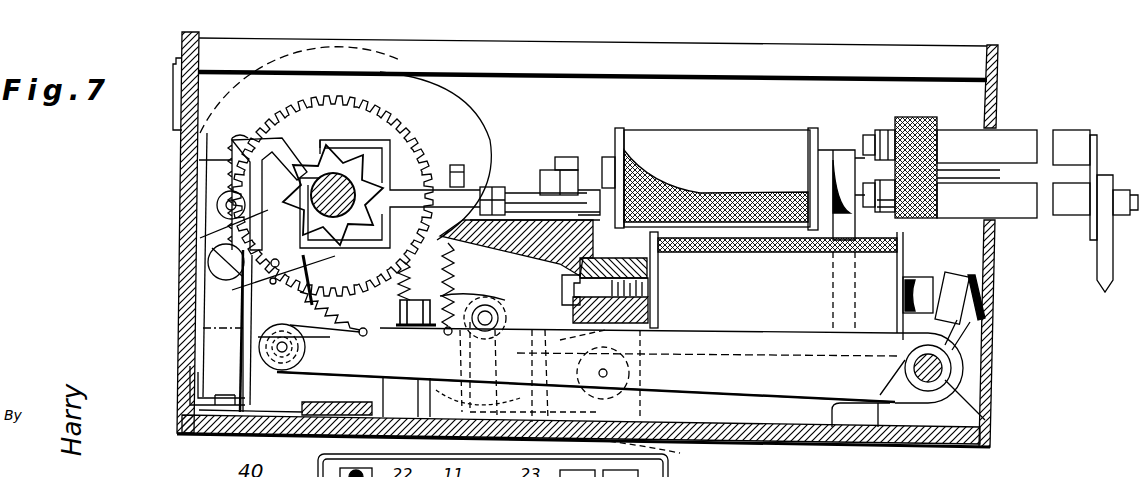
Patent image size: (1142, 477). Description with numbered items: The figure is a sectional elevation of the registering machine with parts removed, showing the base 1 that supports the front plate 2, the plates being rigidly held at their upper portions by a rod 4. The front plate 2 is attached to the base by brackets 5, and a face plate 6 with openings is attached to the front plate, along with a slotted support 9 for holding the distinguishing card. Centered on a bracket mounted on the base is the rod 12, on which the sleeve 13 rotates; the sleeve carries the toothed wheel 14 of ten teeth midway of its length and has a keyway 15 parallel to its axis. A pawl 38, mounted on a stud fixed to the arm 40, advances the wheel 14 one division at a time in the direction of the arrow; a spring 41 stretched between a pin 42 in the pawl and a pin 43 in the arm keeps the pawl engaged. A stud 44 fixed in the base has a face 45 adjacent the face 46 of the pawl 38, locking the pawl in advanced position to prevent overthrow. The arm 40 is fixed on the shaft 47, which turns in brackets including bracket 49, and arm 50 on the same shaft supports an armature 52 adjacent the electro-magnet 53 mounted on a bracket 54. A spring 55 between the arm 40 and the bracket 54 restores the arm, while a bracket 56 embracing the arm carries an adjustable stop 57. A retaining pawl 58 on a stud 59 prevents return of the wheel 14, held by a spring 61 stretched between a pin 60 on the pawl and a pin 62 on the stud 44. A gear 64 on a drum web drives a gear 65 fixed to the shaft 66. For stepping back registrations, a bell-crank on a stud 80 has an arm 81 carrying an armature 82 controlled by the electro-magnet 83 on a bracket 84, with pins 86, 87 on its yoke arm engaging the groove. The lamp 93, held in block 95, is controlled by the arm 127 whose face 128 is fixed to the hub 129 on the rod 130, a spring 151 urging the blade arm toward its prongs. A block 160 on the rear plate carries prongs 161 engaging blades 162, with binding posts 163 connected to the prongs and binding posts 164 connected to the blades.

The base 1 is at (867, 447).
The front plate 2 is at (180, 425).
The rod 4 is at (510, 48).
The brackets 5 is at (200, 432).
The face plate 6 is at (988, 246).
The slotted support 9 is at (176, 62).
The rod 12 is at (378, 179).
The sleeve 13 is at (305, 180).
The toothed wheel 14 is at (417, 153).
The keyway 15 is at (337, 165).
The pawl 38 is at (200, 238).
The arm 40 is at (671, 374).
The spring 41 is at (586, 363).
The pin 42 is at (212, 328).
The pin 43 is at (337, 396).
The stud 44 is at (258, 337).
The face 45 is at (233, 180).
The face 46 is at (233, 145).
The shaft 47 is at (942, 369).
The bracket 49 is at (962, 414).
The arm 50 is at (953, 338).
The armature 52 is at (957, 294).
The electro-magnet 53 is at (780, 286).
The bracket 54 is at (658, 265).
The spring 55 is at (585, 299).
The bracket 56 is at (451, 397).
The adjustable stop 57 is at (425, 306).
The pawl 58 is at (315, 292).
The stud 59 is at (272, 262).
The pin 60 is at (220, 272).
The spring 61 is at (232, 255).
The pin 62 is at (222, 208).
The gear 64 is at (417, 147).
The gear 65 is at (445, 232).
The shaft 66 is at (473, 331).
The stud 80 is at (547, 183).
The arm 81 is at (608, 142).
The armature 82 is at (577, 197).
The electro-magnet 83 is at (712, 140).
The bracket 84 is at (845, 158).
The pin 86 is at (327, 143).
The pin 87 is at (448, 292).
The lamp 93 is at (180, 367).
The block 95 is at (248, 403).
The arm 127 is at (664, 457).
The face 128 is at (660, 320).
The hub 129 is at (633, 397).
The rod 130 is at (532, 422).
The spring 151 is at (633, 343).
The block 160 is at (912, 118).
The prongs 161 is at (1000, 196).
The blades 162 is at (1062, 200).
The binding posts 163 is at (870, 147).
The binding posts 164 is at (1085, 238).